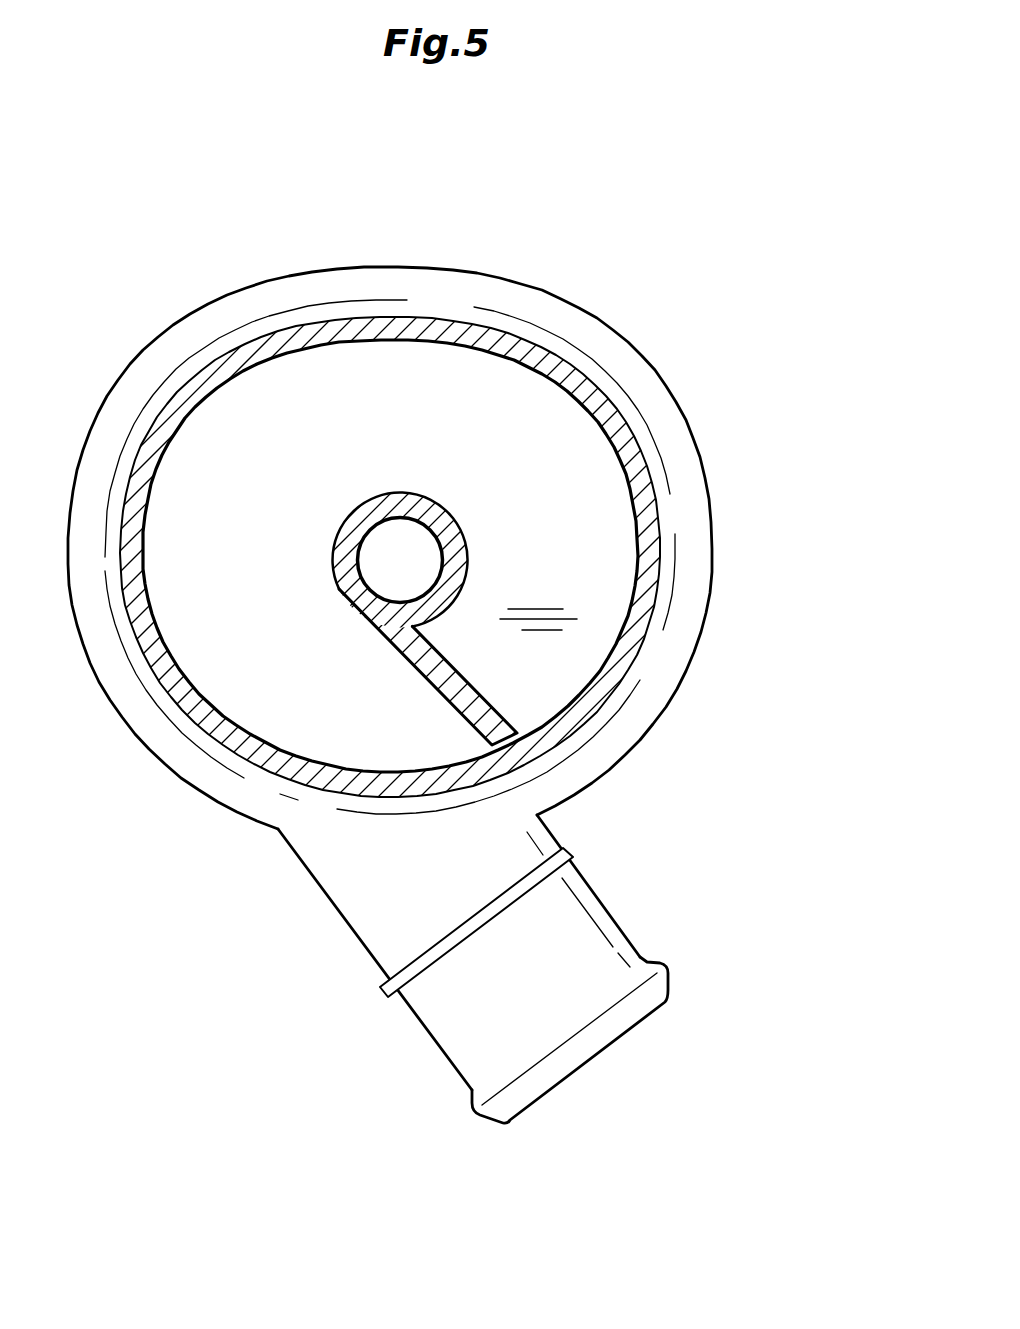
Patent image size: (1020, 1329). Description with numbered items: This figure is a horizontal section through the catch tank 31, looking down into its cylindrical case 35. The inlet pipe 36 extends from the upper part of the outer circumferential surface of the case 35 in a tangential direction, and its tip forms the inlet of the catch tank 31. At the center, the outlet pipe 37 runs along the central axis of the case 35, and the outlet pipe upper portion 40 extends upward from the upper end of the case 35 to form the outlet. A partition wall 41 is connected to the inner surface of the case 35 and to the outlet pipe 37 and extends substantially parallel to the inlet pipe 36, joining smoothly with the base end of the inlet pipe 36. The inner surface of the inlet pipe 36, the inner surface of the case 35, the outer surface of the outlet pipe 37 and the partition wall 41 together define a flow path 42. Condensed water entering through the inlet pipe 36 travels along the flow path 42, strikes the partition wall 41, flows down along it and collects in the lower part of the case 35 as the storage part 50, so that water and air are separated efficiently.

The catch tank 31 is at (452, 224).
The case 35 is at (603, 329).
The inlet pipe 36 is at (453, 1017).
The outlet pipe 37 is at (800, 518).
The outlet pipe upper portion 40 is at (443, 520).
The partition wall 41 is at (470, 697).
The flow path 42 is at (291, 640).
The storage part 50 is at (592, 600).